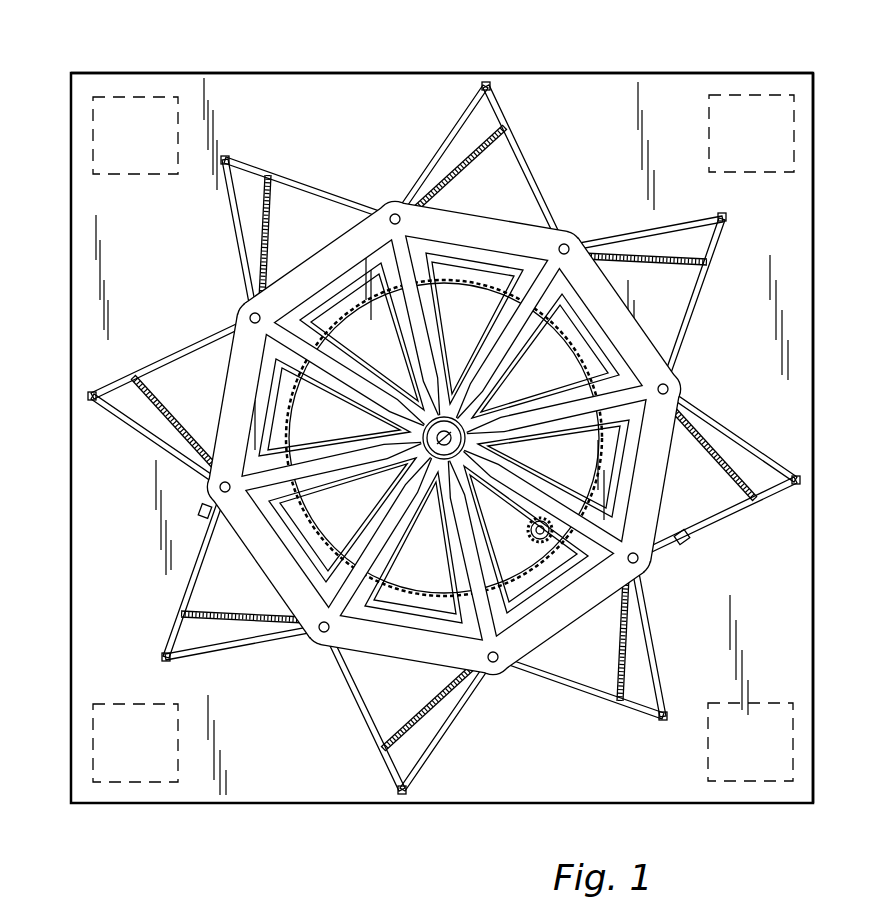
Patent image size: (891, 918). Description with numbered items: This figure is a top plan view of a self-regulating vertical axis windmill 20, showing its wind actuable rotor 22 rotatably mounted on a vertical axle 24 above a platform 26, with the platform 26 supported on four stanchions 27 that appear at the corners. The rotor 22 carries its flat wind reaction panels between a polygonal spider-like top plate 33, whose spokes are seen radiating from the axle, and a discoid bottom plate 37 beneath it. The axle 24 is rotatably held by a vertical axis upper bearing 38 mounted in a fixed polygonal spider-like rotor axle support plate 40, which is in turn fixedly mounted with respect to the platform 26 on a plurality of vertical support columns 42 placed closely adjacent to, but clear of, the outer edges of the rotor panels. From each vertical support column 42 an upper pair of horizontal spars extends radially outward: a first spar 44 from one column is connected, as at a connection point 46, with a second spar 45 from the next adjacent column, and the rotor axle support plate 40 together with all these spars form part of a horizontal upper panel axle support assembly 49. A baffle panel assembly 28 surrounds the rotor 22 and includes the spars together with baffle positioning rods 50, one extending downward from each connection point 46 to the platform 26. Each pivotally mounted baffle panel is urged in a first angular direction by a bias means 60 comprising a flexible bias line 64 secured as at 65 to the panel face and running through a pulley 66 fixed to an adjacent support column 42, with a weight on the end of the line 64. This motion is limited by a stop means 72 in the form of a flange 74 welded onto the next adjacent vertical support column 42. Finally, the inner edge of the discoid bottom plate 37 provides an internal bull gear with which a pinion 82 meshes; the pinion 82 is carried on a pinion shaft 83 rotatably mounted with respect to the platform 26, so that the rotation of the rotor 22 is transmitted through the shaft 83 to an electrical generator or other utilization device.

The self-regulating vertical axis windmill 20 is at (70, 640).
The wind actuable rotor 22 is at (553, 308).
The vertical axle 24 is at (413, 458).
The platform 26 is at (675, 73).
The stanchions 27 is at (128, 176).
The baffle panel assembly 28 is at (683, 537).
The polygonal spider-like top plate 33 is at (462, 267).
The discoid bottom plate 37 is at (375, 260).
The vertical axis upper bearing 38 is at (477, 447).
The rotor axle support plate 40 is at (502, 233).
The vertical support columns 42 is at (567, 237).
The first spar 44 is at (573, 680).
The second spar 45 is at (643, 607).
The connection point 46 is at (657, 710).
The horizontal upper panel axle support assembly 49 is at (466, 103).
The baffle positioning rods 50 is at (724, 219).
The bias means 60 is at (720, 470).
The flexible bias line 64 is at (262, 230).
The bias line securing point 65 is at (272, 178).
The pulley 66 is at (680, 413).
The stop means 72 is at (207, 513).
The flange 74 is at (518, 682).
The pinion 82 is at (532, 510).
The pinion shaft 83 is at (537, 537).